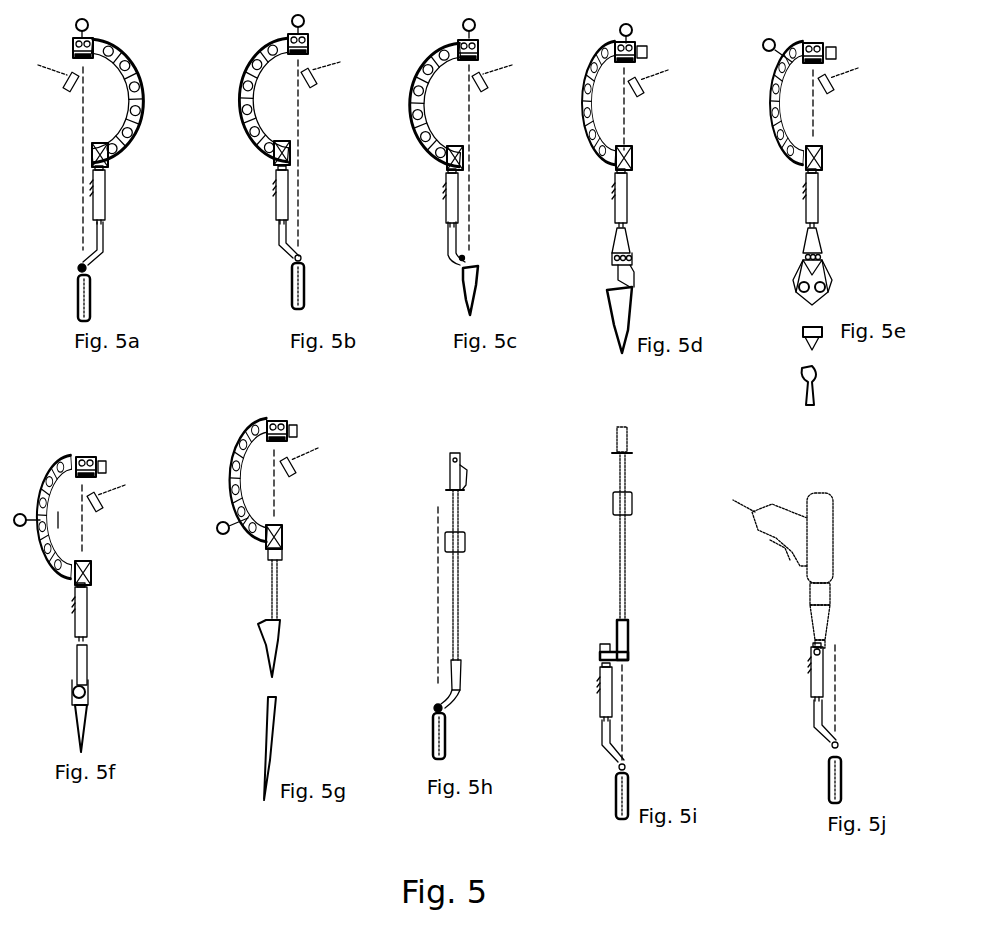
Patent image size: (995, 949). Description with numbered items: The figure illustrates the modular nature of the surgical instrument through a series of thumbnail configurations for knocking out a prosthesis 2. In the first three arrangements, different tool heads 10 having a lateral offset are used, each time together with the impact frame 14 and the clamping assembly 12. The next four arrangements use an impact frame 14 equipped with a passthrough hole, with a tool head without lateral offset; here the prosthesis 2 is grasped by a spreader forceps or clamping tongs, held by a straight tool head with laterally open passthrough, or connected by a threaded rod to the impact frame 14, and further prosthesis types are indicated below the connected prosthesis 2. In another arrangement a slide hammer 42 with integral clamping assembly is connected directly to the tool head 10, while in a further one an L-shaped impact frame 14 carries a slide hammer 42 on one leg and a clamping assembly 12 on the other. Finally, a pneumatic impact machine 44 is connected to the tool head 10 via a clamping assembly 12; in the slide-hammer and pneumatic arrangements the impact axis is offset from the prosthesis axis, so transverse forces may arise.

In FIG. 5A, the prosthesis 2 is at (78, 297).
In FIG. 5B, the prosthesis 2 is at (293, 294).
In FIG. 5C, the prosthesis 2 is at (464, 298).
In FIG. 5D, the prosthesis 2 is at (612, 305).
In FIG. 5E, the prosthesis 2 is at (805, 298).
In FIG. 5F, the prosthesis 2 is at (76, 716).
In FIG. 5G, the prosthesis 2 is at (268, 654).
In FIG. 5H, the prosthesis 2 is at (433, 733).
In FIG. 5I, the prosthesis 2 is at (617, 790).
In FIG. 5J, the prosthesis 2 is at (830, 771).
In FIG. 5A, the tool head 10 is at (103, 243).
In FIG. 5B, the tool head 10 is at (281, 240).
In FIG. 5C, the tool head 10 is at (450, 258).
In FIG. 5H, the tool head 10 is at (456, 686).
In FIG. 5I, the tool head 10 is at (606, 748).
In FIG. 5J, the tool head 10 is at (815, 727).
In FIG. 5A, the clamping assembly 12 is at (105, 205).
In FIG. 5B, the clamping assembly 12 is at (287, 200).
In FIG. 5C, the clamping assembly 12 is at (457, 204).
In FIG. 5D, the clamping assembly 12 is at (627, 205).
In FIG. 5E, the clamping assembly 12 is at (818, 210).
In FIG. 5F, the clamping assembly 12 is at (88, 620).
In FIG. 5I, the clamping assembly 12 is at (612, 700).
In FIG. 5J, the clamping assembly 12 is at (813, 683).
In FIG. 5A, the impact frame 14 is at (134, 75).
In FIG. 5B, the impact frame 14 is at (250, 55).
In FIG. 5C, the impact frame 14 is at (422, 57).
In FIG. 5D, the impact frame 14 is at (592, 58).
In FIG. 5E, the impact frame 14 is at (772, 95).
In FIG. 5F, the impact frame 14 is at (52, 477).
In FIG. 5G, the impact frame 14 is at (237, 450).
In FIG. 5I, the impact frame 14 is at (628, 650).
In FIG. 5H, the slide hammer 42 is at (467, 548).
In FIG. 5I, the slide hammer 42 is at (632, 515).
In FIG. 5J, the pneumatic impact machine 44 is at (825, 530).